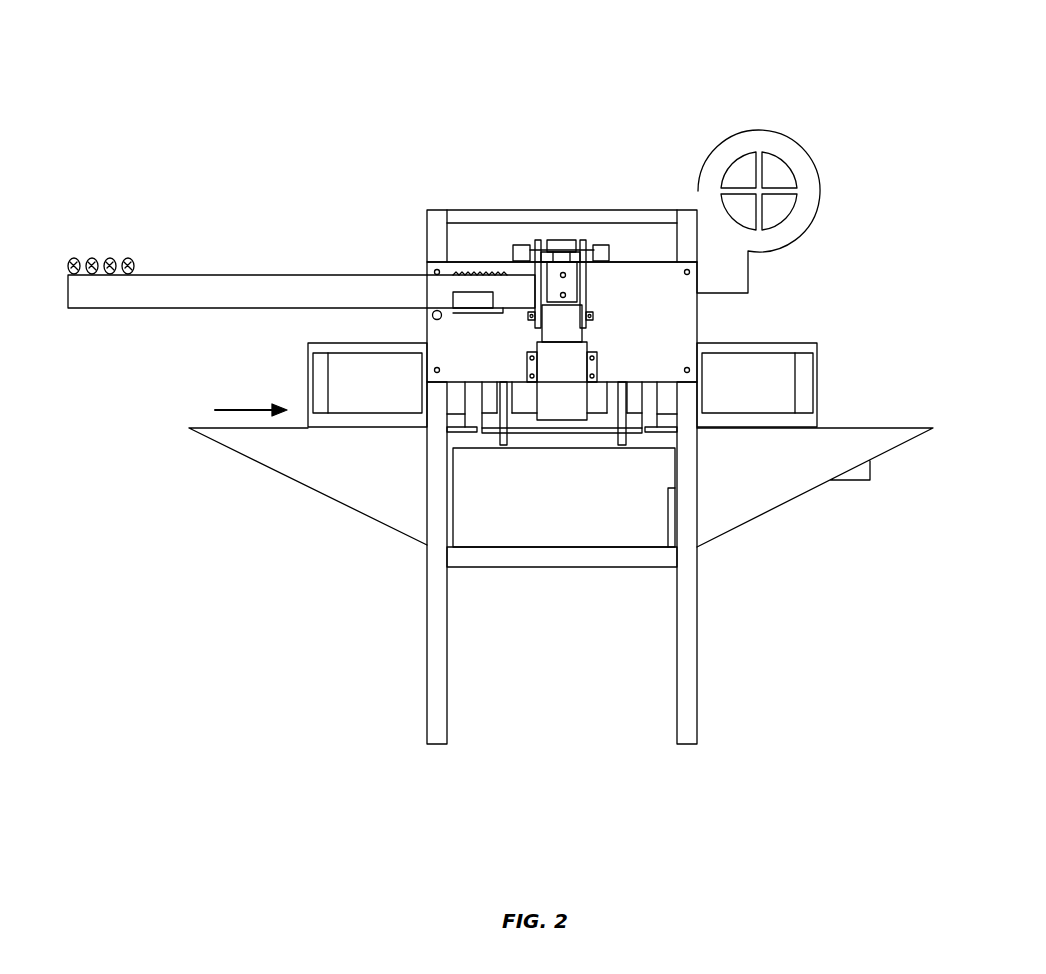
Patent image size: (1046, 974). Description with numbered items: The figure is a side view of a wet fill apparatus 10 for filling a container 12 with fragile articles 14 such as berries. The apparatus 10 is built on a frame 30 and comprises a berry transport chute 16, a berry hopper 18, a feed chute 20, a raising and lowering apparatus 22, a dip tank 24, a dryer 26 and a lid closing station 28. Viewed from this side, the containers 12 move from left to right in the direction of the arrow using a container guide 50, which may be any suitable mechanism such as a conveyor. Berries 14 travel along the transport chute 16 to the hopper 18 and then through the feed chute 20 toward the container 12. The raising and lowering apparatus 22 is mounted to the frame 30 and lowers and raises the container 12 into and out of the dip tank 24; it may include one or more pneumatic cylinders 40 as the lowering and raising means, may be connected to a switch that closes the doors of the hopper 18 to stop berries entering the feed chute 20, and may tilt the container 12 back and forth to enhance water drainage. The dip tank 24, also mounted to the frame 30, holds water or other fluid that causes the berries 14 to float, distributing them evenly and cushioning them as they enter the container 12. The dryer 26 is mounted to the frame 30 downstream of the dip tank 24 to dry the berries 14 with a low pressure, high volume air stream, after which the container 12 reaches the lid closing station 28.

The apparatus 10 is at (348, 108).
The container 12 is at (362, 393).
The articles 14 is at (65, 253).
The berry transport chute 16 is at (131, 309).
The berry hopper 18 is at (567, 330).
The feed chute 20 is at (567, 357).
The raising and lowering apparatus 22 is at (523, 245).
The dip tank 24 is at (528, 527).
The dryer 26 is at (790, 143).
The lid closing station 28 is at (805, 380).
The frame 30 is at (685, 660).
The pneumatic cylinders 40 is at (562, 240).
The container guide 50 is at (316, 358).